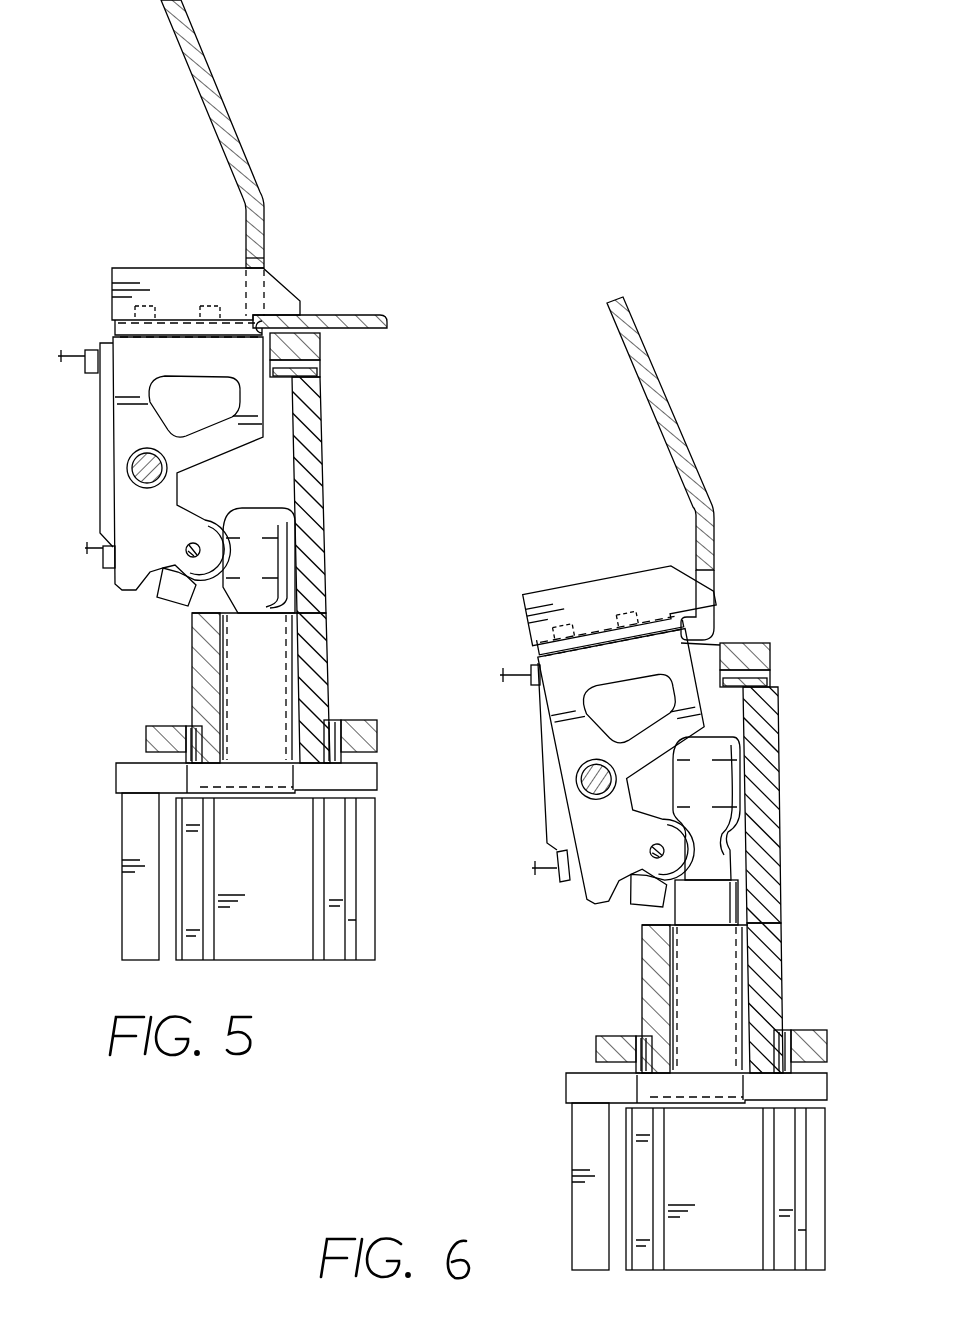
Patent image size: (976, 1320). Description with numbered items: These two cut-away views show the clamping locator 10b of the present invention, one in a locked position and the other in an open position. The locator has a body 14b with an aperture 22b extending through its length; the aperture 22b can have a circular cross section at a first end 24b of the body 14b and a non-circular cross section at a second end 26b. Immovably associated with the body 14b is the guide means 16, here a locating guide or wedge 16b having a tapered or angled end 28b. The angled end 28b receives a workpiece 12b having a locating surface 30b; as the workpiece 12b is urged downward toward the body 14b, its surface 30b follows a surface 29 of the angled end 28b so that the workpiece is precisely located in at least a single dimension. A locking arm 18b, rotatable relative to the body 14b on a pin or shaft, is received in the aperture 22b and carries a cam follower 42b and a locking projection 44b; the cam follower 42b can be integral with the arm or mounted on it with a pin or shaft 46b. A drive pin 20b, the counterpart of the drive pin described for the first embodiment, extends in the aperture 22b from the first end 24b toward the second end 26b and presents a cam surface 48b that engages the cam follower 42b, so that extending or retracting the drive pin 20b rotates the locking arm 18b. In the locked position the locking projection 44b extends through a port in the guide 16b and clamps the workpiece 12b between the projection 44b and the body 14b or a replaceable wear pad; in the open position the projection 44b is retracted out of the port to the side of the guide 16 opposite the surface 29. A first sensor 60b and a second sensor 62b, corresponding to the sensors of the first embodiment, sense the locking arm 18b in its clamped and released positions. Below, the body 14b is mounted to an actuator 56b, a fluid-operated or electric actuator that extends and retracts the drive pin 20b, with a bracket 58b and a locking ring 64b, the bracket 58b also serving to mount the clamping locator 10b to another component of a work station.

In FIG. 5, the clamping locator 10b is at (130, 95).
In FIG. 6, the clamping locator 10b is at (605, 427).
In FIG. 5, the guide means 16 is at (365, 85).
In FIG. 6, the guide means 16 is at (755, 340).
In FIG. 5, the locating guide or wedge 16b is at (245, 154).
In FIG. 6, the locating guide or wedge 16b is at (675, 432).
In FIG. 5, the angled end 28b is at (202, 43).
In FIG. 6, the angled end 28b is at (630, 318).
In FIG. 5, the surface 29 is at (215, 81).
In FIG. 6, the surface 29 is at (645, 348).
In FIG. 5, the locking projection 44b is at (157, 268).
In FIG. 6, the locking projection 44b is at (630, 573).
In FIG. 5, the locating surface 30b is at (262, 321).
In FIG. 5, the workpiece 12b is at (347, 313).
In FIG. 5, the locking arm 18b is at (133, 361).
In FIG. 6, the locking arm 18b is at (537, 663).
In FIG. 5, the detent 60b is at (93, 377).
In FIG. 6, the detent 60b is at (537, 690).
In FIG. 5, the lower detent 62b is at (110, 563).
In FIG. 6, the lower detent 62b is at (567, 887).
In FIG. 5, the cam follower 42b is at (170, 607).
In FIG. 6, the cam follower 42b is at (637, 905).
In FIG. 5, the plunger head 48b is at (273, 510).
In FIG. 6, the plunger head 48b is at (727, 737).
In FIG. 5, the second end 26b is at (353, 548).
In FIG. 6, the second end 26b is at (667, 856).
In FIG. 5, the pin or shaft 46b is at (280, 487).
In FIG. 6, the body 14b is at (767, 830).
In FIG. 5, the sleeve 20b is at (320, 614).
In FIG. 6, the sleeve 20b is at (733, 898).
In FIG. 5, the aperture 22b is at (285, 674).
In FIG. 6, the aperture 22b is at (740, 965).
In FIG. 5, the first end 24b is at (327, 717).
In FIG. 6, the first end 24b is at (770, 1017).
In FIG. 5, the locking ring 64b is at (122, 788).
In FIG. 6, the locking ring 64b is at (657, 1093).
In FIG. 5, the bracket leg 58b is at (143, 796).
In FIG. 6, the bracket leg 58b is at (584, 1123).
In FIG. 5, the support body 56b is at (302, 902).
In FIG. 6, the support body 56b is at (642, 1221).